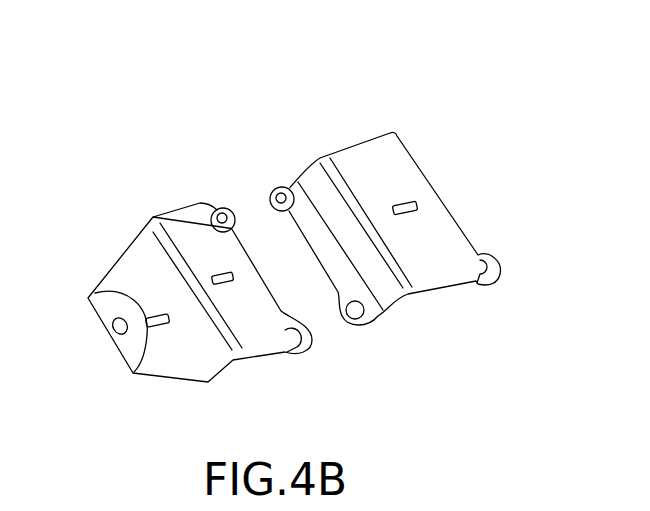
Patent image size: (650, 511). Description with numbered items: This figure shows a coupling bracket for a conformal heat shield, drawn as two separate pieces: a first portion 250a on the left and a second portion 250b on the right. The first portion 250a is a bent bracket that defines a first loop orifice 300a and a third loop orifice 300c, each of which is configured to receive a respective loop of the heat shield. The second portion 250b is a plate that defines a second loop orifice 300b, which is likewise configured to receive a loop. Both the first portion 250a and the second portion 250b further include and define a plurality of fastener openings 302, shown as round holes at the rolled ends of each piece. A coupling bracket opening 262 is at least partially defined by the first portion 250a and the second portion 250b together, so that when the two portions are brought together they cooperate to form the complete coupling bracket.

The first portion 250a is at (125, 162).
The second portion 250b is at (342, 123).
The coupling bracket opening 262 is at (313, 279).
The first loop orifice 300a is at (233, 283).
The second loop orifice 300b is at (413, 205).
The third loop orifice 300c is at (153, 317).
The fastener openings 302 is at (221, 216).